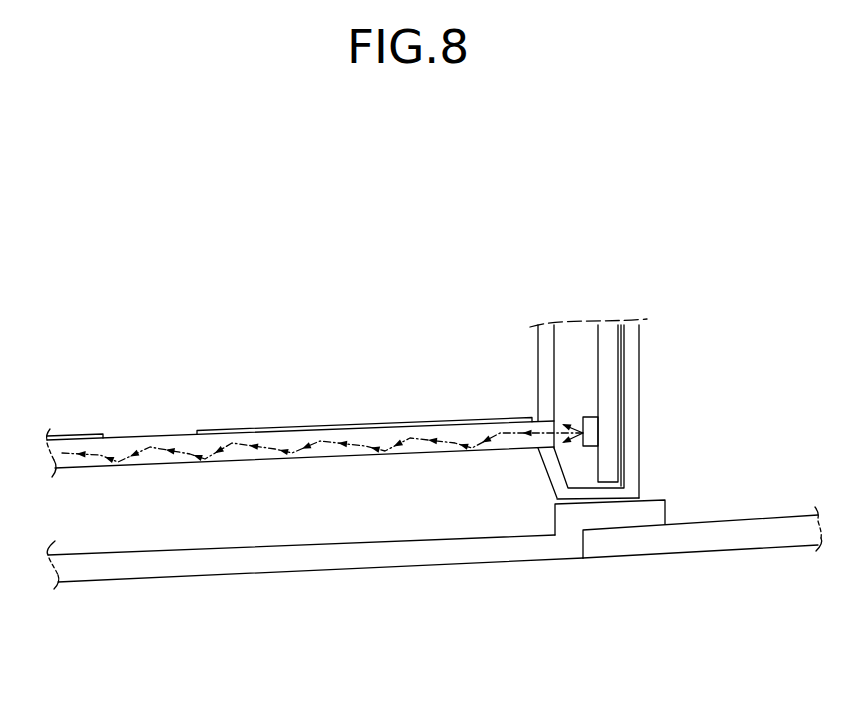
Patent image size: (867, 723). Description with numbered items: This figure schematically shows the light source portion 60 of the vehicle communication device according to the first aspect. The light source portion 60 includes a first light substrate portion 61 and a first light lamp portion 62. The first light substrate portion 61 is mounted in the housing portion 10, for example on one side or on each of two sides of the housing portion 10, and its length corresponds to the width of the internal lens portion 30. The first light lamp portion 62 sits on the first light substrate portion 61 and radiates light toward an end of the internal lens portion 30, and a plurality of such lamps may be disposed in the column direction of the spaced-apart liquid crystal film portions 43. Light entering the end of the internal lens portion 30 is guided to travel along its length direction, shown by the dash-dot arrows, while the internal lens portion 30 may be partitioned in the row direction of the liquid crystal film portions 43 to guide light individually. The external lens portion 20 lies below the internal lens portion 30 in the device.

The housing portion 10 is at (640, 475).
The external lens portion 20 is at (320, 563).
The internal lens portion 30 is at (173, 458).
The liquid crystal film portion 43 is at (299, 428).
The light source portion 60 is at (665, 409).
The first light substrate portion 61 is at (608, 383).
The first light lamp portion 62 is at (592, 437).